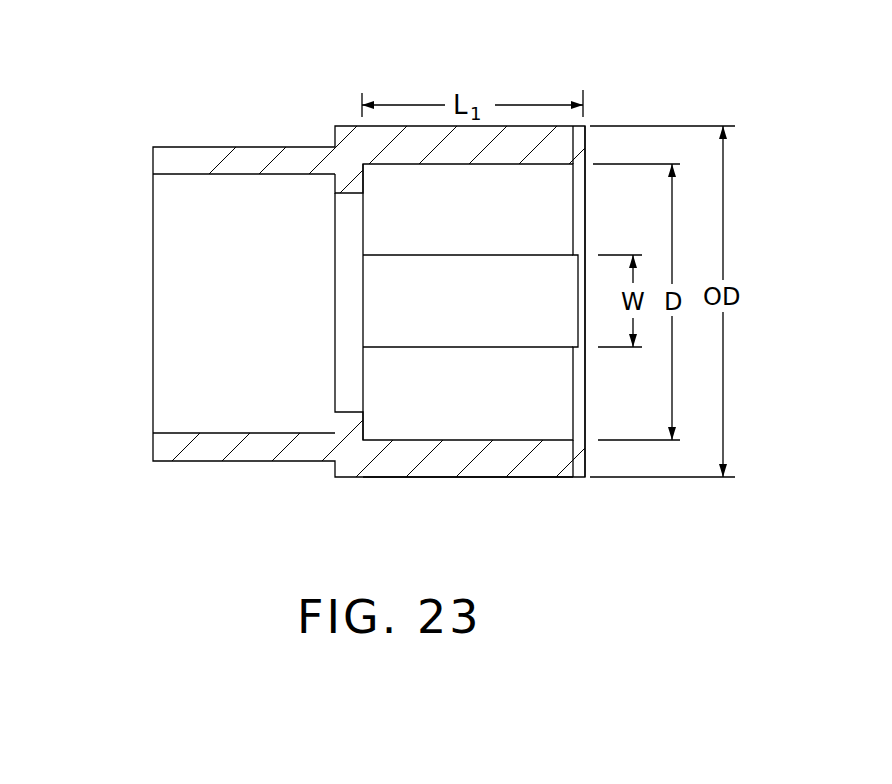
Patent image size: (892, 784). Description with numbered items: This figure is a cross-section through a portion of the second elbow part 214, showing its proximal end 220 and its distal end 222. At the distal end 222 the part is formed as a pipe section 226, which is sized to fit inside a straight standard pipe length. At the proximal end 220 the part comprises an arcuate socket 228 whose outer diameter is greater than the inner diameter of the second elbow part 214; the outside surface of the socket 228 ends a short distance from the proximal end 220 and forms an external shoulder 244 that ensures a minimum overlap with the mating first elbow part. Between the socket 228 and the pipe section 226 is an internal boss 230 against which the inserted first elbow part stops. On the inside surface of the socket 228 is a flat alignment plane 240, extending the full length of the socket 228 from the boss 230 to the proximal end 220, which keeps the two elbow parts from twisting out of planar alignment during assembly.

The second elbow part 214 is at (712, 79).
The proximal end 220 is at (582, 459).
The distal end 222 is at (160, 443).
The pipe section 226 is at (172, 160).
The arcuate socket 228 is at (544, 465).
The internal boss 230 is at (343, 182).
The flat alignment plane 240 is at (438, 318).
The external shoulder 244 is at (370, 465).